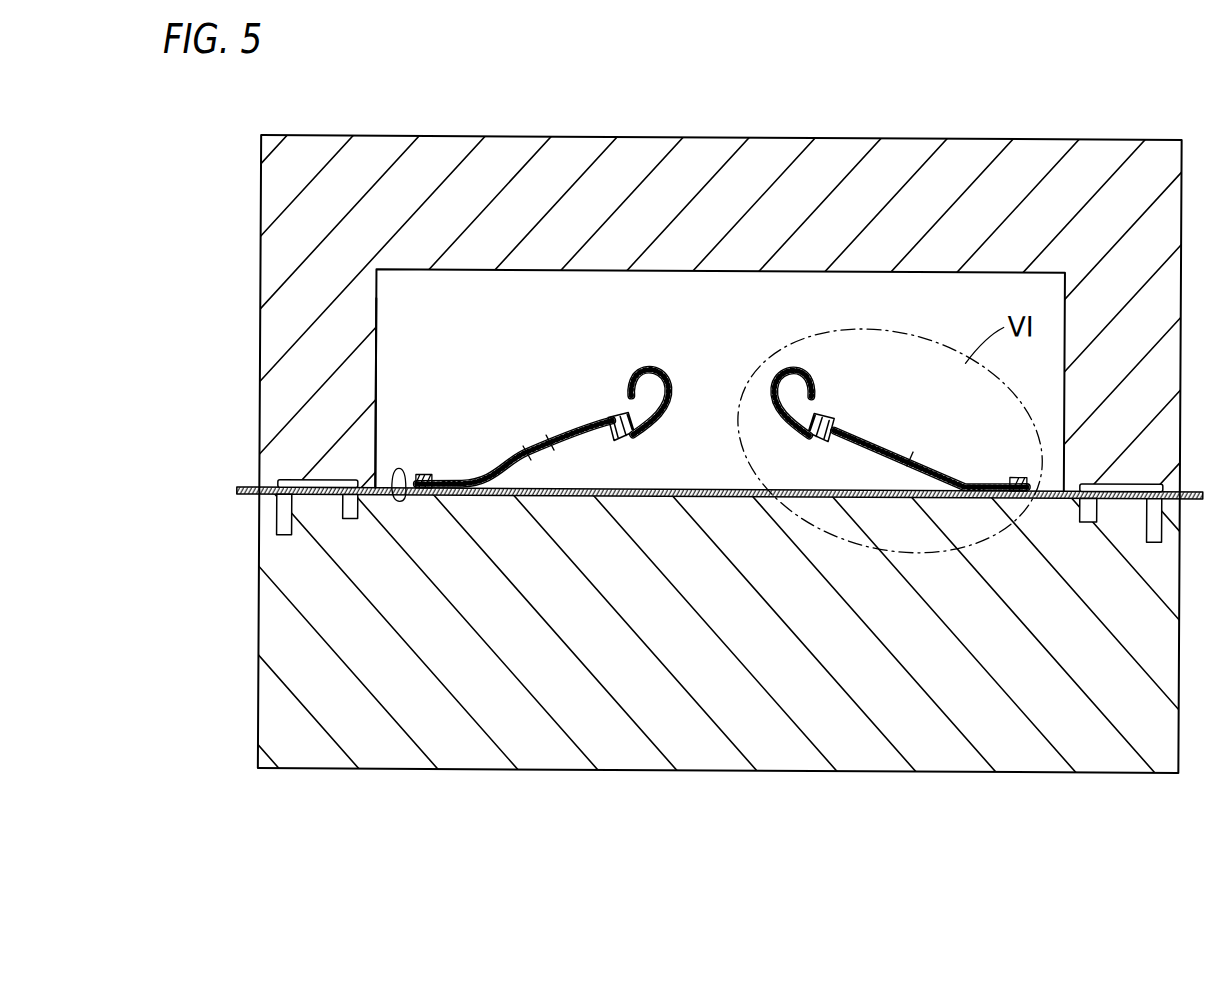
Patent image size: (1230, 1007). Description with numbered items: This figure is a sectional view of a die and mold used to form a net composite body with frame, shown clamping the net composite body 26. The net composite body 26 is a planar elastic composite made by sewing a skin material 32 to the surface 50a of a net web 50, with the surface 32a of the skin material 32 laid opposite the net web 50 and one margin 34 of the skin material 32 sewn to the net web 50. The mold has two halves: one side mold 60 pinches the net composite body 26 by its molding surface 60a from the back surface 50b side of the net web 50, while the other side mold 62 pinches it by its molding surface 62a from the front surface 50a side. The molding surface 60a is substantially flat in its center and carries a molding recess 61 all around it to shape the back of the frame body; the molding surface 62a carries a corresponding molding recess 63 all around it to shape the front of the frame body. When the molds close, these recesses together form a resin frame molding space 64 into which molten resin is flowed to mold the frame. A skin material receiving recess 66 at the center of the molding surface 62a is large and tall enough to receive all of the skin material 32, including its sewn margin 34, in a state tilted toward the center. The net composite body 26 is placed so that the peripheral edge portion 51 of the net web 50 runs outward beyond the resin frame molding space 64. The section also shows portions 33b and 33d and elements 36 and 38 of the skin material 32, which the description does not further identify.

The net composite body 26 is at (748, 817).
The skin material 32 is at (778, 450).
The surface of the skin material 32a is at (545, 448).
The inclined portion 33b is at (887, 443).
The inclined portion 33d is at (485, 470).
The margin of the skin material 34 is at (422, 473).
The bent portion 36 is at (622, 415).
The hook portion 38 is at (660, 368).
The net web 50 is at (632, 457).
The surface of the net web 50a is at (568, 488).
The back surface of the net web 50b is at (535, 498).
The peripheral edge portion of the net web 51 is at (240, 489).
The one side mold 60 is at (303, 643).
The molding surface of one side mold 60a is at (407, 494).
The molding recess 61 is at (330, 498).
The other side mold 62 is at (300, 279).
The molding surface of the other side mold 62a is at (383, 484).
The molding recess 63 is at (303, 485).
The resin frame molding space 64 is at (287, 498).
The skin material receiving recess 66 is at (704, 308).